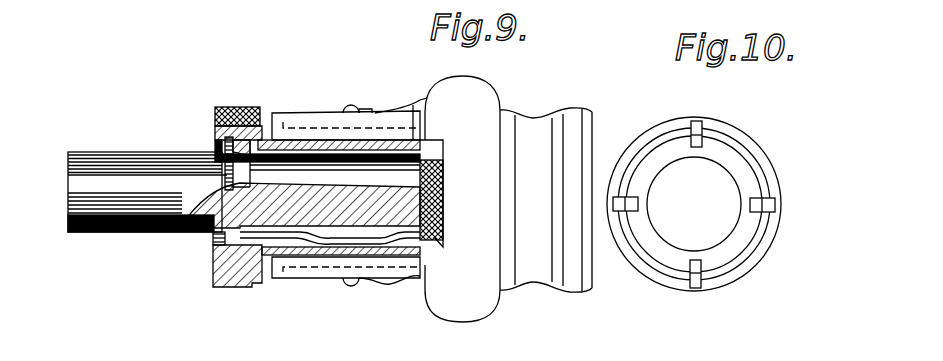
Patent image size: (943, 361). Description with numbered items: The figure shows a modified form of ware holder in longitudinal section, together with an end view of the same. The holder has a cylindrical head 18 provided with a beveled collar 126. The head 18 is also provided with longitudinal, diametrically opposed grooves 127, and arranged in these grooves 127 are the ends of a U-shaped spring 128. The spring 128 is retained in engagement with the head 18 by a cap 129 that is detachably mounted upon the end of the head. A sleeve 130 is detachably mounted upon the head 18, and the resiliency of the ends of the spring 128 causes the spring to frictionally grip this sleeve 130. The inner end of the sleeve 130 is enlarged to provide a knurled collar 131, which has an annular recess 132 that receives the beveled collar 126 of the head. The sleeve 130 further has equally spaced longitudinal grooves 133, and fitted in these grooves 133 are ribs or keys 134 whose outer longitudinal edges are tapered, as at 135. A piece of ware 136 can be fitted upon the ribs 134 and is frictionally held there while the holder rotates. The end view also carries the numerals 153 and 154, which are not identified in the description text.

In FIG. 9, the head 18 is at (322, 205).
In FIG. 9, the beveled collar 126 is at (256, 115).
In FIG. 9, the longitudinal diametrically opposed grooves 127 is at (235, 284).
In FIG. 9, the U-shaped spring 128 is at (383, 233).
In FIG. 9, the cap 129 is at (434, 236).
In FIG. 9, the sleeve 130 is at (312, 137).
In FIG. 10, the sleeve 130 is at (662, 247).
In FIG. 9, the knurled collar 131 is at (226, 108).
In FIG. 10, the knurled collar 131 is at (752, 270).
In FIG. 9, the annular recess 132 is at (214, 134).
In FIG. 9, the longitudinal grooves 133 is at (297, 140).
In FIG. 10, the ribs or keys 134 is at (697, 133).
In FIG. 9, the tapered outer longitudinal edges 135 is at (327, 112).
In FIG. 10, the tapered outer longitudinal edges 135 is at (700, 119).
In FIG. 9, the piece of ware 136 is at (493, 91).
In FIG. 10, the ring 153 is at (700, 147).
In FIG. 9, the lug 154 is at (340, 100).